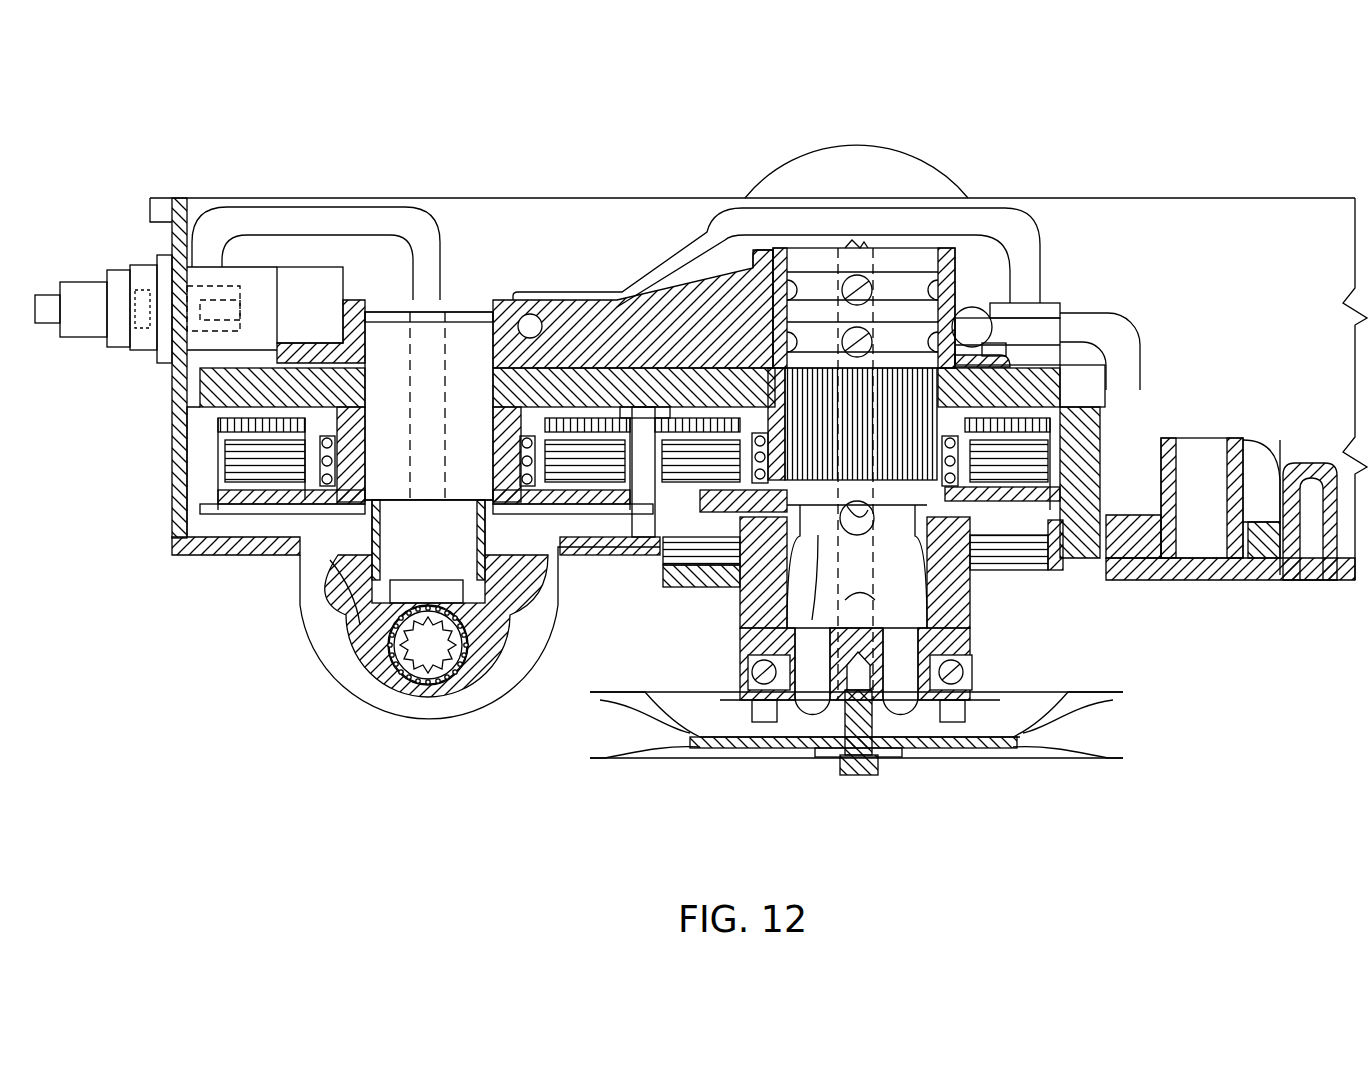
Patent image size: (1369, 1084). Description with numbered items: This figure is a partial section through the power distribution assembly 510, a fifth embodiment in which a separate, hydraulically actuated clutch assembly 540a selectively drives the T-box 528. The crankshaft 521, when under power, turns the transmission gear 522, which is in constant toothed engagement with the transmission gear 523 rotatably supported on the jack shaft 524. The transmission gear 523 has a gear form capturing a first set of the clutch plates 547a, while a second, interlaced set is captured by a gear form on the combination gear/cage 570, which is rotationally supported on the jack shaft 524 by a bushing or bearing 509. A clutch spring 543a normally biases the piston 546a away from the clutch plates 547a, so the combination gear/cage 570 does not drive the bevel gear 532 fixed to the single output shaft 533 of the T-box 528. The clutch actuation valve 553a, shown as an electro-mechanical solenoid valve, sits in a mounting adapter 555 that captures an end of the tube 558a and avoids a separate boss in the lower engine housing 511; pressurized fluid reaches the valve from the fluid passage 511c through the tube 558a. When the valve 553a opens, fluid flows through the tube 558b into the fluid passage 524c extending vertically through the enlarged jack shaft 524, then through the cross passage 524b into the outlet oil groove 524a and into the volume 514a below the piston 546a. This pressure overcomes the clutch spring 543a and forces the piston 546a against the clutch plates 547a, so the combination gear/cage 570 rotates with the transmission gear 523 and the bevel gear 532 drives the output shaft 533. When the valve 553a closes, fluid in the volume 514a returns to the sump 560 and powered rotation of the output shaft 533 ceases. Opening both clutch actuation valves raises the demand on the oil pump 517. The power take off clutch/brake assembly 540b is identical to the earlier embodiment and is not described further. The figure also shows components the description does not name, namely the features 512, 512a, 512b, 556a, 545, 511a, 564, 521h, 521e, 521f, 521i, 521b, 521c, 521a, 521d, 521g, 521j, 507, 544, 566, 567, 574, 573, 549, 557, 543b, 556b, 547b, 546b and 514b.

The power distribution assembly 510 is at (205, 118).
The tube 558b is at (312, 215).
The tube 558a is at (322, 300).
The clutch actuation valve 553a is at (78, 290).
The mounting adapter 555 is at (135, 345).
The jack shaft 524 is at (388, 325).
The fluid passage 524c is at (430, 325).
The cross passage 524b is at (428, 534).
The outlet oil groove 524a is at (460, 578).
The housing 512 is at (560, 332).
The housing step 512a is at (785, 262).
The housing shoulder 512b is at (478, 322).
The transmission gear 523 is at (235, 385).
The clutch spring 543a is at (290, 430).
The first bearing 556a is at (322, 446).
The clutch plates 547a is at (252, 458).
The piston 546a is at (228, 483).
The hydraulic clutch assembly 540a is at (208, 522).
The combination gear/cage 570 is at (300, 582).
The bevel gear 532 is at (356, 560).
The bushing or bearing 509 is at (402, 603).
The output shaft 533 is at (398, 658).
The lower engine housing 511 is at (406, 748).
The T-box 528 is at (372, 800).
The volume 514a is at (560, 522).
The second clutch plate 545 is at (642, 522).
The housing flange 511a is at (672, 562).
The second clutch pack 564 is at (695, 562).
The crankshaft 521 is at (895, 250).
The carrier top wall 521h is at (842, 258).
The upper carrier bearing 521e is at (859, 290).
The lower carrier bearing 521f is at (860, 341).
The carrier spline 521i is at (905, 400).
The carrier outer wall 521b is at (955, 258).
The carrier inner wall 521c is at (955, 290).
The carrier boss 521a is at (1010, 345).
The carrier fingers 521d is at (738, 642).
The carrier bore 521g is at (868, 512).
The carrier passage 521j is at (868, 522).
The ball detent 507 is at (952, 580).
The lower bearing 544 is at (750, 662).
The first seal 566 is at (748, 682).
The second seal 567 is at (940, 700).
The center bolt 574 is at (852, 762).
The washer 573 is at (878, 760).
The pulley 549 is at (1105, 745).
The coil loop 557 is at (1118, 330).
The transmission gear 522 is at (1052, 385).
The third clutch plate 543b is at (1045, 410).
The second bearing 556b is at (1050, 440).
The third clutch pack 547b is at (1000, 462).
The second clutch carrier 546b is at (1032, 476).
The second rotor 514b is at (1035, 520).
The fluid passage 511c is at (1095, 432).
The power take off clutch/brake assembly 540b is at (1075, 532).
The oil pump 517 is at (1240, 612).
The sump 560 is at (1205, 240).